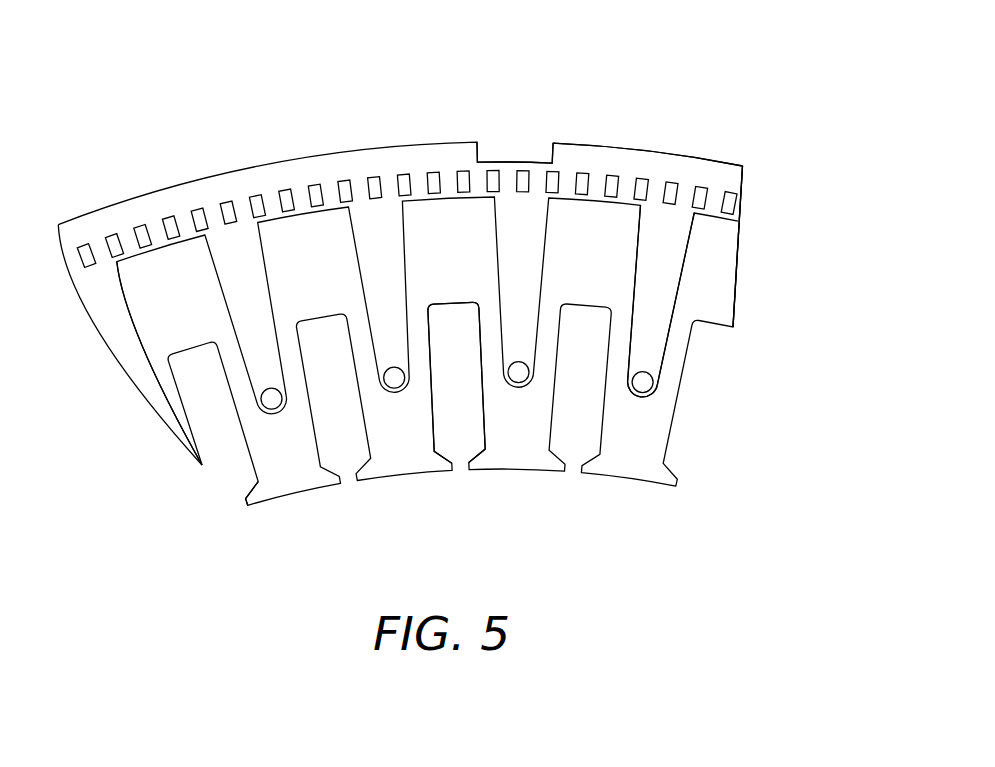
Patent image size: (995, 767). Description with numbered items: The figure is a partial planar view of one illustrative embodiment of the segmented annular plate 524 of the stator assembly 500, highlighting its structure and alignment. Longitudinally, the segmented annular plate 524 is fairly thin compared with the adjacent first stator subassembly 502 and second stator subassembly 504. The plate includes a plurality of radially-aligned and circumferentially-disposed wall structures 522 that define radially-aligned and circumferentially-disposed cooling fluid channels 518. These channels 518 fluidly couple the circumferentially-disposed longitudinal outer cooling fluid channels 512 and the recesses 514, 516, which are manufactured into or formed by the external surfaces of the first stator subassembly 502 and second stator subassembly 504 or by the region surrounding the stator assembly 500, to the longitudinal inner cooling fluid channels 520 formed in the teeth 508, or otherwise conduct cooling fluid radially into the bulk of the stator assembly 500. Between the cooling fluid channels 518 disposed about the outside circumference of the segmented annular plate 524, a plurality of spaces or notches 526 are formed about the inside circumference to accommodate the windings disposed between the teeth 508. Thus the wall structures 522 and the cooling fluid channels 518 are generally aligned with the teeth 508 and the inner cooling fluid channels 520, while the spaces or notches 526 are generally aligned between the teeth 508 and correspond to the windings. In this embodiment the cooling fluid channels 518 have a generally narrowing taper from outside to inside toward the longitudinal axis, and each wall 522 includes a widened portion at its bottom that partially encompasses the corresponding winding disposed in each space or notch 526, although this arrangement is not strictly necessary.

The stator assembly 500 is at (449, 121).
The first stator subassembly 502 is at (758, 216).
The second stator subassembly 504 is at (738, 246).
The teeth 508 is at (153, 403).
The longitudinal outer cooling fluid channels 512 is at (637, 154).
The recess 514 is at (531, 136).
The recess 516 is at (586, 135).
The radially-aligned and circumferentially-disposed cooling fluid channels 518 is at (679, 214).
The longitudinal inner cooling fluid channels 520 is at (264, 426).
The radially-aligned and circumferentially-disposed wall structures 522 is at (661, 197).
The segmented annular plate 524 is at (251, 527).
The spaces or notches 526 is at (462, 446).